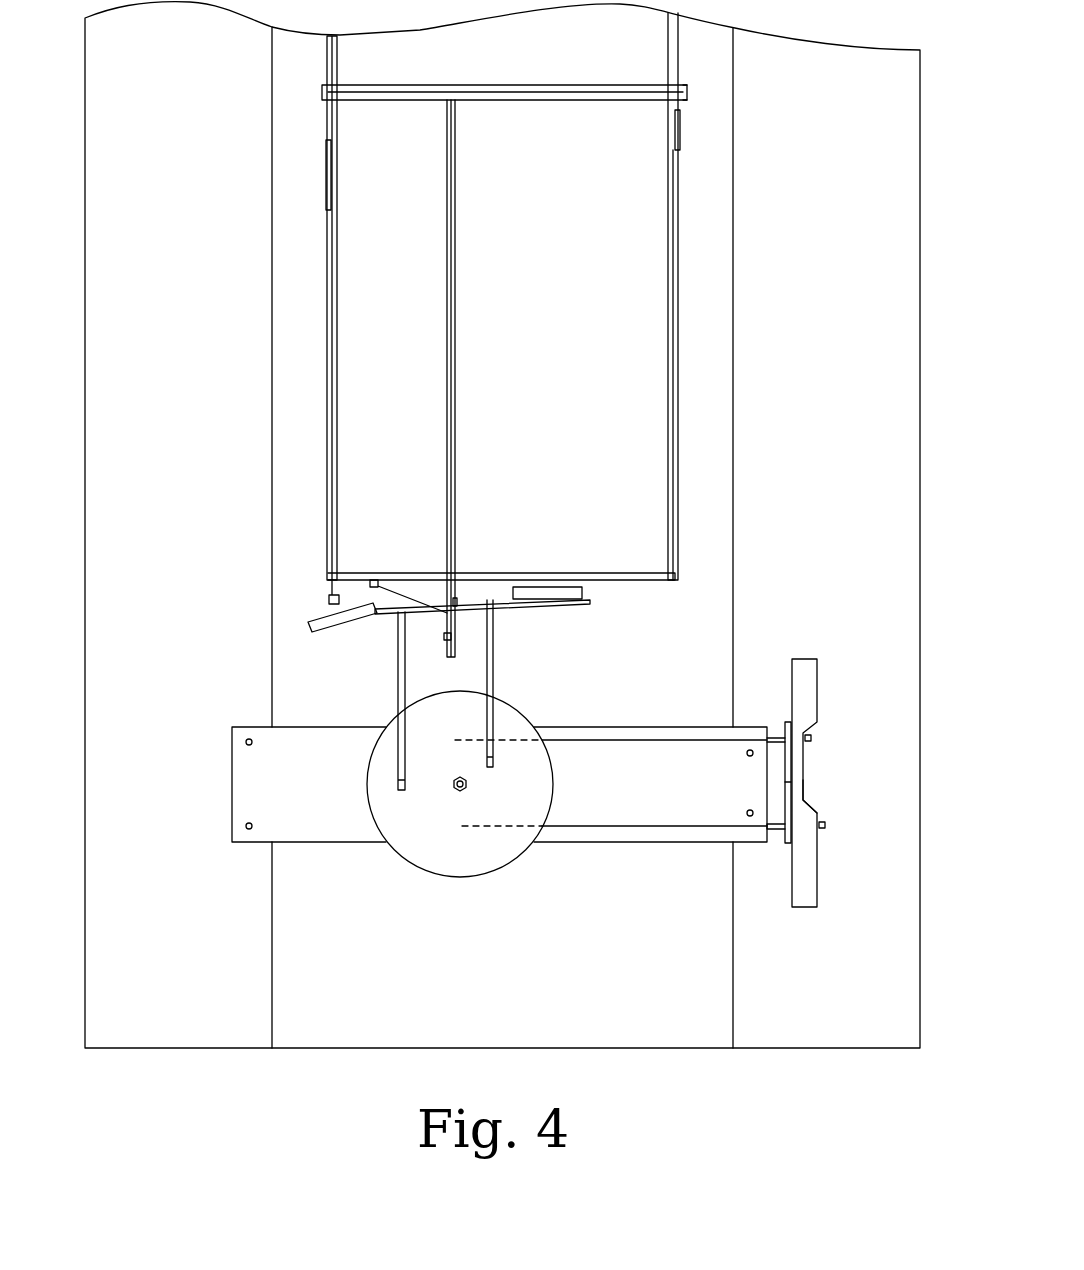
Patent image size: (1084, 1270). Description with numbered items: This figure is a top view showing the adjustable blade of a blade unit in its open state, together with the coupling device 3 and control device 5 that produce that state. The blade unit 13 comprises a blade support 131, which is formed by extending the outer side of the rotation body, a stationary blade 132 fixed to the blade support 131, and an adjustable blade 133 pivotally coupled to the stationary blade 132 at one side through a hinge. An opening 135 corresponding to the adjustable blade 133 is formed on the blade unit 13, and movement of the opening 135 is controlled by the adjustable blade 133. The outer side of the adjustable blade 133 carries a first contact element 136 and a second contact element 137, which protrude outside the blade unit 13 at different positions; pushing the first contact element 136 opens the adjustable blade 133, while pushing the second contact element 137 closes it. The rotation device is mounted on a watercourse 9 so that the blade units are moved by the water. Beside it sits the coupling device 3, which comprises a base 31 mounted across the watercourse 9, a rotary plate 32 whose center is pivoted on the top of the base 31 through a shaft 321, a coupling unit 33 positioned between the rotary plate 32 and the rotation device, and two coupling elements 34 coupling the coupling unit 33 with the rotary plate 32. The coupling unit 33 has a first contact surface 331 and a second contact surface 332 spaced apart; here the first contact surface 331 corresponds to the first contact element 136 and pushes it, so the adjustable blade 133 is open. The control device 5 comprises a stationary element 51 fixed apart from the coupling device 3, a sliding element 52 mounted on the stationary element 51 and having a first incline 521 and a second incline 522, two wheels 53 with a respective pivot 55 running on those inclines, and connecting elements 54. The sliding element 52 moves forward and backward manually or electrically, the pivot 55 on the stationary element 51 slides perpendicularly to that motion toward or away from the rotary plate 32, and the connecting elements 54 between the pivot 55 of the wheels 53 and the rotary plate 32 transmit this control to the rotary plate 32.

The watercourse 9 is at (840, 1062).
The blade unit 13 is at (682, 313).
The blade support 131 is at (327, 455).
The stationary blade 132 is at (372, 362).
The adjustable blade 133 is at (455, 292).
The opening 135 is at (620, 490).
The first contact element 136 is at (445, 638).
The second contact element 137 is at (329, 599).
The coupling device 3 is at (480, 782).
The base 31 is at (272, 826).
The rotary plate 32 is at (500, 848).
The shaft 321 is at (456, 791).
The coupling unit 33 is at (570, 601).
The first contact surface 331 is at (543, 595).
The second contact surface 332 is at (347, 625).
The coupling element 34 is at (400, 700).
The control device 5 is at (820, 773).
The stationary element 51 is at (780, 845).
The sliding element 52 is at (805, 858).
The first incline 521 is at (818, 730).
The second incline 522 is at (808, 800).
The wheel 53 is at (826, 824).
The connecting element 54 is at (680, 738).
The pivot 55 is at (778, 740).